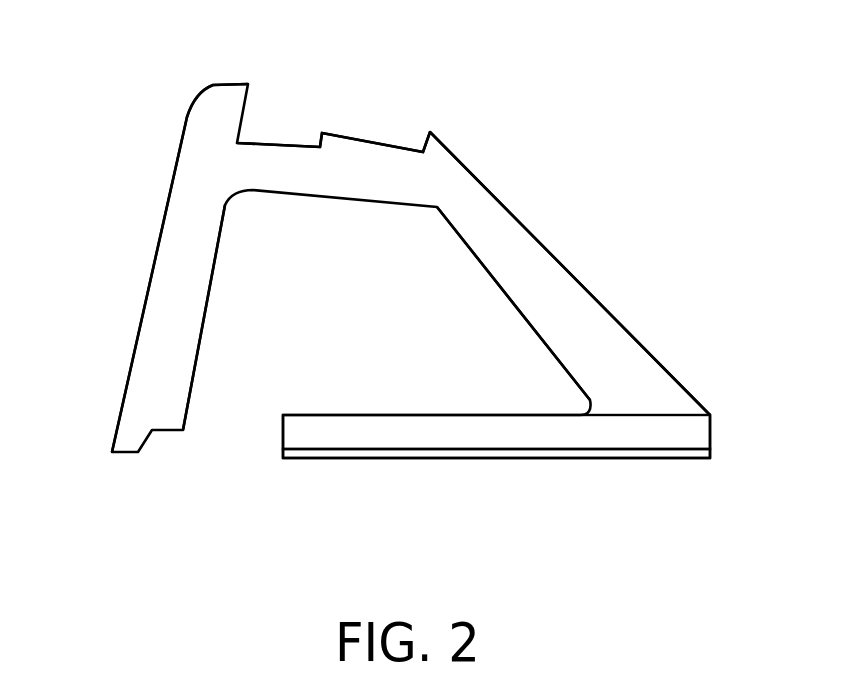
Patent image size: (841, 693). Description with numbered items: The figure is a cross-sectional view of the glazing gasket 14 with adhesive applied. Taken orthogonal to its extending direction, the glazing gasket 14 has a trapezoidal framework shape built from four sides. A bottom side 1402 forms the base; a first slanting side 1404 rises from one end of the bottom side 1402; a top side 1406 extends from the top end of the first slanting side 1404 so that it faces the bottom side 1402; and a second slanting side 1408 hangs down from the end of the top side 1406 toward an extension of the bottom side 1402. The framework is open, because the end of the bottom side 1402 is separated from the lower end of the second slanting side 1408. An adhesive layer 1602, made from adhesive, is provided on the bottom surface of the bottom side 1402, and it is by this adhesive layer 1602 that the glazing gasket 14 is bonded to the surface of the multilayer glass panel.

The glazing gasket 14 is at (490, 162).
The bottom side 1402 is at (397, 433).
The first slanting side 1404 is at (528, 248).
The top side 1406 is at (363, 162).
The second slanting side 1408 is at (185, 227).
The adhesive layer 1602 is at (523, 458).